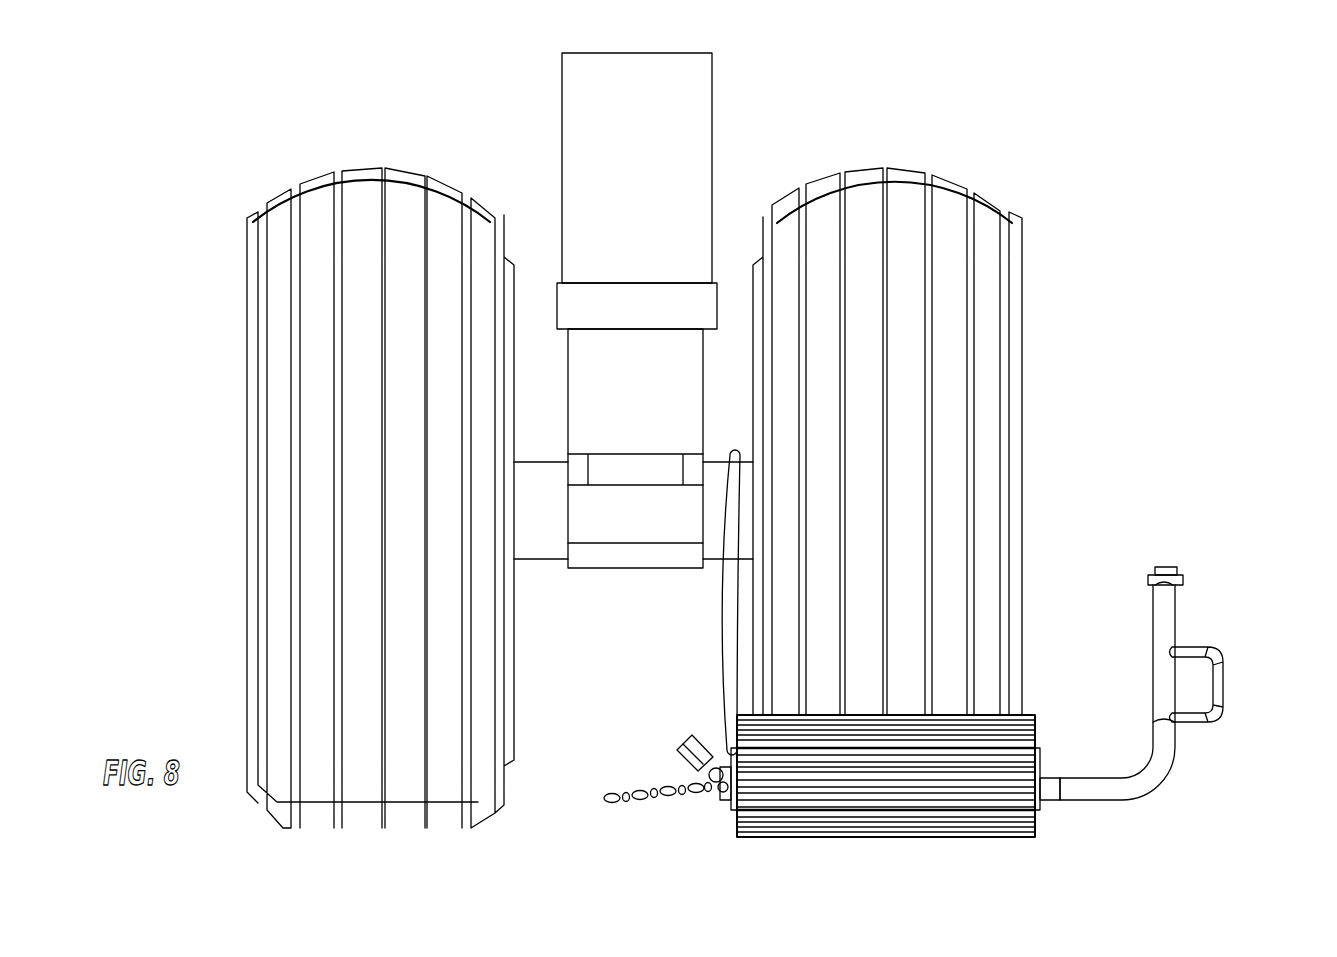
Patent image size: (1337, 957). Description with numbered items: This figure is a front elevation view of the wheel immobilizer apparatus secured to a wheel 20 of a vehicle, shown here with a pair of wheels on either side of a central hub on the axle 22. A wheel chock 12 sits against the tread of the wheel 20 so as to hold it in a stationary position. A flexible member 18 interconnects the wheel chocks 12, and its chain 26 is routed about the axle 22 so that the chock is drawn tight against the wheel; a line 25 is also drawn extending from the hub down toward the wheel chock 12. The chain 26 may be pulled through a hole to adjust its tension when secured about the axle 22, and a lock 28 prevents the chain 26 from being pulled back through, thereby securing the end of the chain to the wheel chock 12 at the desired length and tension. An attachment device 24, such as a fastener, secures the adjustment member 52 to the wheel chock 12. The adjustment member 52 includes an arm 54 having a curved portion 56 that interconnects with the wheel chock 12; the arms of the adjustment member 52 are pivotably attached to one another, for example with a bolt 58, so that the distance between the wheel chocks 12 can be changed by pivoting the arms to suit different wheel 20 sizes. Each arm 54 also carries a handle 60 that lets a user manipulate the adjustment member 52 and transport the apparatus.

The wheel chock 12 is at (920, 838).
The flexible member 18 is at (703, 590).
The wheel 20 is at (365, 178).
The axle 22 is at (533, 541).
The attachment device 24 is at (721, 797).
The cable 25 is at (718, 642).
The chain 26 is at (650, 804).
The lock 28 is at (683, 737).
The adjustment member 52 is at (1173, 698).
The arm 54 is at (1168, 625).
The curved portion 56 is at (1125, 778).
The bolt 58 is at (1187, 587).
The handle 60 is at (1227, 680).